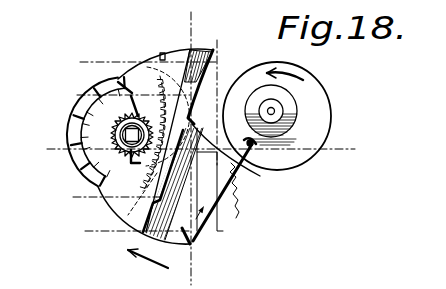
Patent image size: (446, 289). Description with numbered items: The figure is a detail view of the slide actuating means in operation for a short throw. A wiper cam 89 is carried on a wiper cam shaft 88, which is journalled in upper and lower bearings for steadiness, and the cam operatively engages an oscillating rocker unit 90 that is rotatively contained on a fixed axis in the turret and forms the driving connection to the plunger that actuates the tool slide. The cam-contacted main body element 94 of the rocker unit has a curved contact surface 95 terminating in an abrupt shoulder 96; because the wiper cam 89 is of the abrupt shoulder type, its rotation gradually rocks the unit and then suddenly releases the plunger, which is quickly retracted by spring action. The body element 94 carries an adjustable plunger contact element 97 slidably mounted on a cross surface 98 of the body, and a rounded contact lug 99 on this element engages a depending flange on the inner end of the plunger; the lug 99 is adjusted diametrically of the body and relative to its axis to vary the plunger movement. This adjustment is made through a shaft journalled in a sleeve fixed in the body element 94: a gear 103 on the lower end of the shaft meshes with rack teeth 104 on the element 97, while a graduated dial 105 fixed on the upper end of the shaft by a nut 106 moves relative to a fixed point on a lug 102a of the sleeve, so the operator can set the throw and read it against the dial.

The wiper cam shaft 88 is at (296, 112).
The wiper cam 89 is at (298, 163).
The oscillating rocker unit 90 is at (214, 231).
The main body element 94 is at (193, 245).
The curved contact surface 95 is at (222, 195).
The abrupt shoulder 96 is at (238, 182).
The adjustable plunger contact element 97 is at (192, 128).
The cross surface 98 is at (162, 53).
The rounded contact lug 99 is at (204, 124).
The lug 102a is at (73, 117).
The gear 103 is at (158, 140).
The rack teeth 104 is at (152, 63).
The graduated dial 105 is at (84, 161).
The nut 106 is at (107, 196).